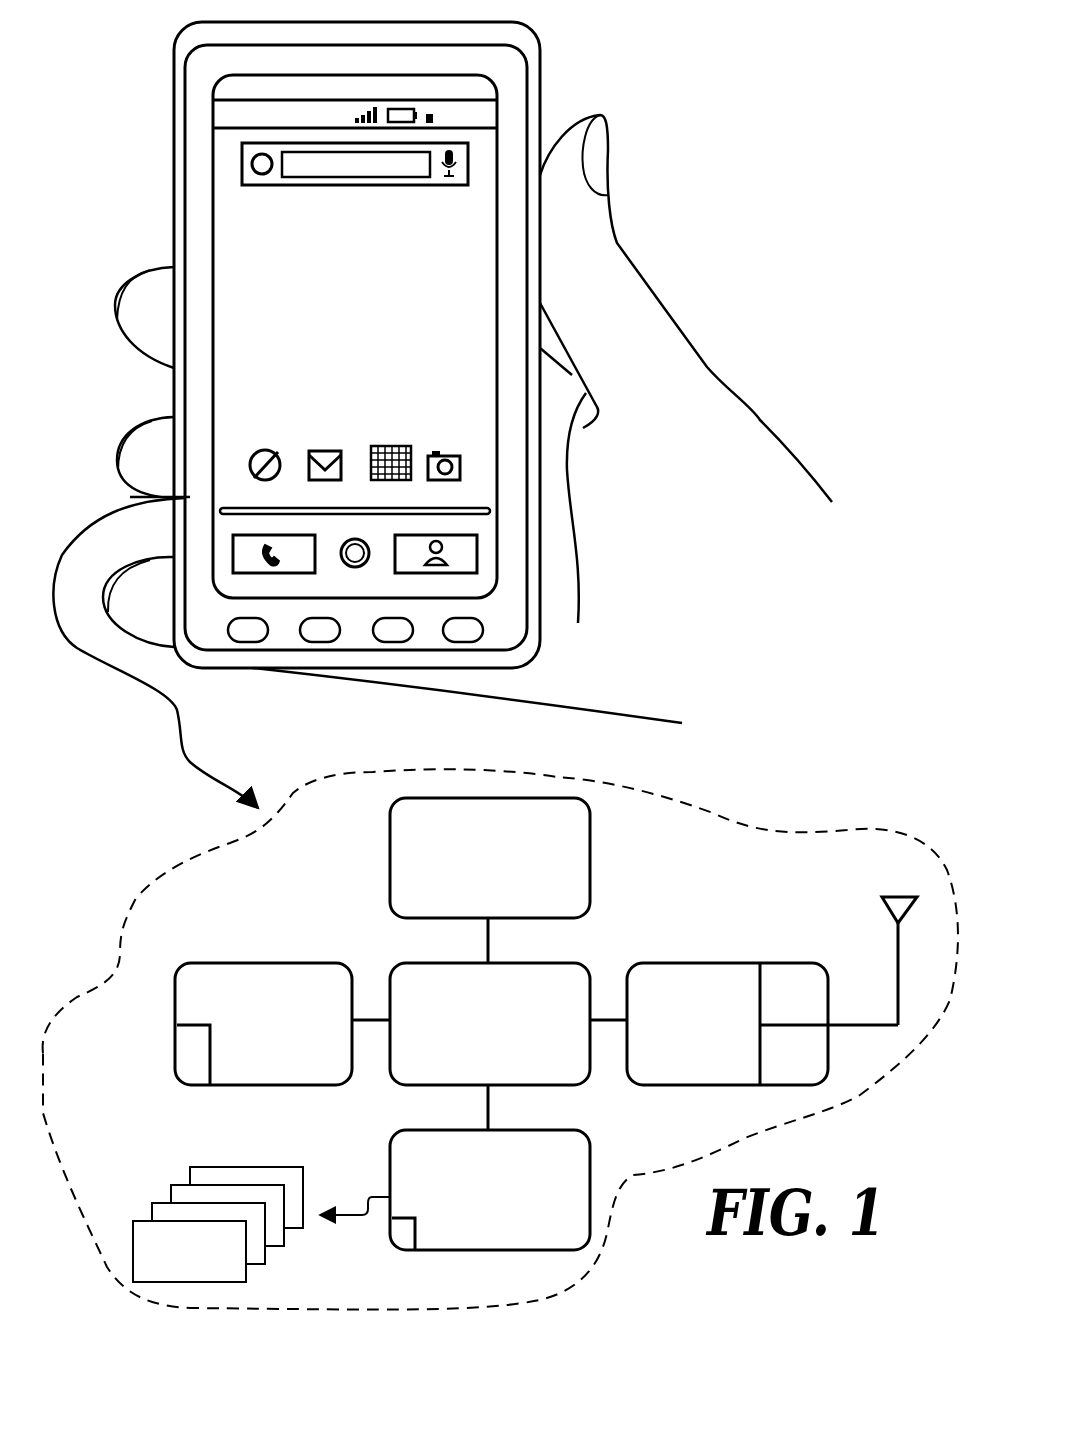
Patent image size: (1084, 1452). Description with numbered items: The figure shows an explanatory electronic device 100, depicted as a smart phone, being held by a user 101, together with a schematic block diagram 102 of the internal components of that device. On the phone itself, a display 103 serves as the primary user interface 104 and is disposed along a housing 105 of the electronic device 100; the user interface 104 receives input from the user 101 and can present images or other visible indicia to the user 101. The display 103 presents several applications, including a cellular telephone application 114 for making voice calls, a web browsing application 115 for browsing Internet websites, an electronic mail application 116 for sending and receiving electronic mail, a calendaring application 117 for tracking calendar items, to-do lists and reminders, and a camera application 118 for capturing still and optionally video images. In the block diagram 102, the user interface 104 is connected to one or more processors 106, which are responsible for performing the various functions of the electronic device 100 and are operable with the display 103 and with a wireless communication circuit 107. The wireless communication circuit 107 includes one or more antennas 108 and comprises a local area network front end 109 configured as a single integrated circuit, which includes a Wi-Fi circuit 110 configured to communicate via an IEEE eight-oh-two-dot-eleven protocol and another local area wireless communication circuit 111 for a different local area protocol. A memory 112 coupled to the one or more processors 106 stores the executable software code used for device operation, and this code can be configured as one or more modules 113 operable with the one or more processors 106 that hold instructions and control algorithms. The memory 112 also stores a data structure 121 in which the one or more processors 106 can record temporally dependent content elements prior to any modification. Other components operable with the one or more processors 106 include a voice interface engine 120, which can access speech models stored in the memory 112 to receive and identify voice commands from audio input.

The electronic device 100 is at (150, 202).
The user 101 is at (660, 372).
The schematic block diagram 102 is at (708, 812).
The display 103 is at (228, 224).
The user interface 104 is at (388, 863).
The housing 105 is at (177, 390).
The one or more processors 106 is at (580, 963).
The wireless communication circuit 107 is at (690, 963).
The antenna 108 is at (890, 915).
The local area network front end 109 is at (268, 963).
The Wi-Fi circuit 110 is at (803, 1002).
The other local area wireless communication circuit 111 is at (797, 1075).
The memory 112 is at (592, 1160).
The modules 113 is at (148, 1192).
The cellular telephone application 114 is at (290, 560).
The web browsing application 115 is at (267, 448).
The electronic mail application 116 is at (321, 452).
The calendaring application 117 is at (388, 445).
The camera application 118 is at (443, 452).
The voice interface engine 120 is at (190, 1048).
The data structure 121 is at (396, 1233).